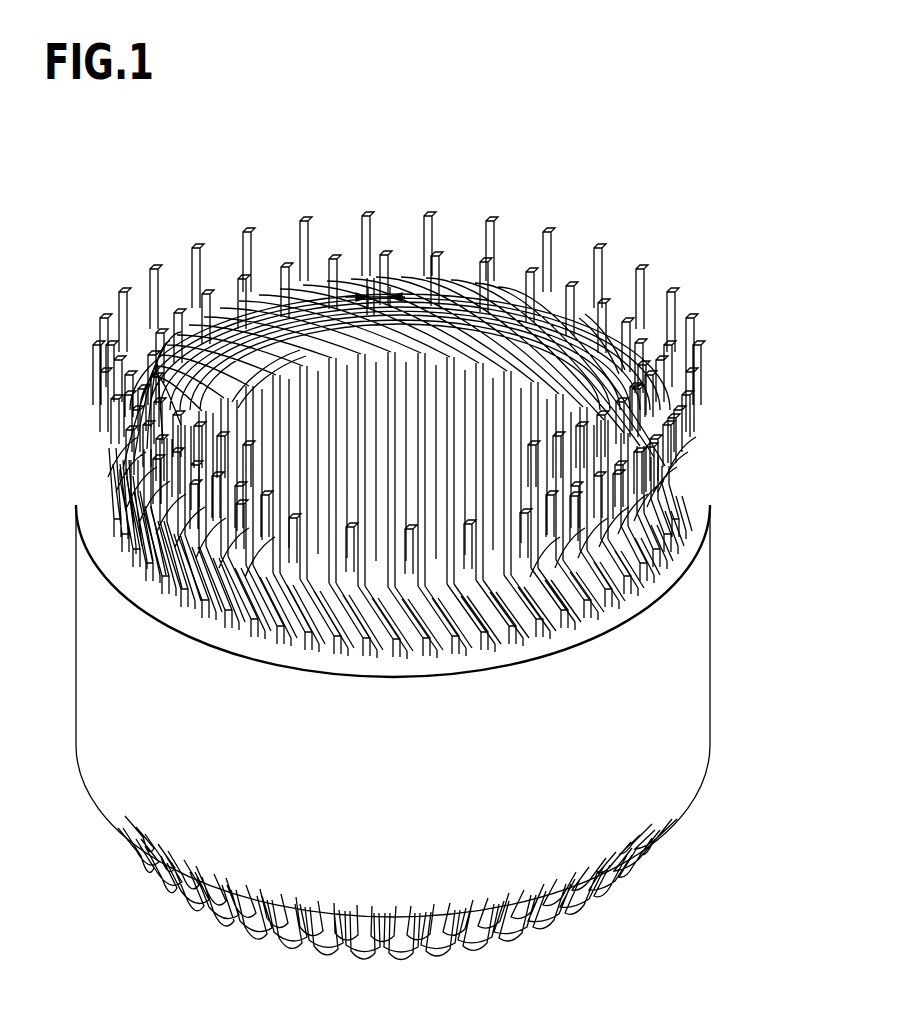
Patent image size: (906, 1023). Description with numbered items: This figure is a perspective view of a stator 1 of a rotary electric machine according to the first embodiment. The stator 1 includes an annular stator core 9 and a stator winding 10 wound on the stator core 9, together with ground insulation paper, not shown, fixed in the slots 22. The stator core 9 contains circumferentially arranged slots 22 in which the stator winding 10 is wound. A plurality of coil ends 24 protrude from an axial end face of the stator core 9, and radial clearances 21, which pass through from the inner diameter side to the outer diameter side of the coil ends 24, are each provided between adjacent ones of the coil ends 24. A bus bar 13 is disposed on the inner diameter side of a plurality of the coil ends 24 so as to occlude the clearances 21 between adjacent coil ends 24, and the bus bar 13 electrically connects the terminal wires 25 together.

The stator 1 is at (700, 347).
The stator core 9 is at (693, 653).
The stator winding 10 is at (693, 413).
The bus bar 13 is at (487, 290).
The radial clearance 21 is at (375, 275).
The slot 22 is at (232, 400).
The coil end 24 is at (427, 283).
The terminal wire 25 is at (585, 312).